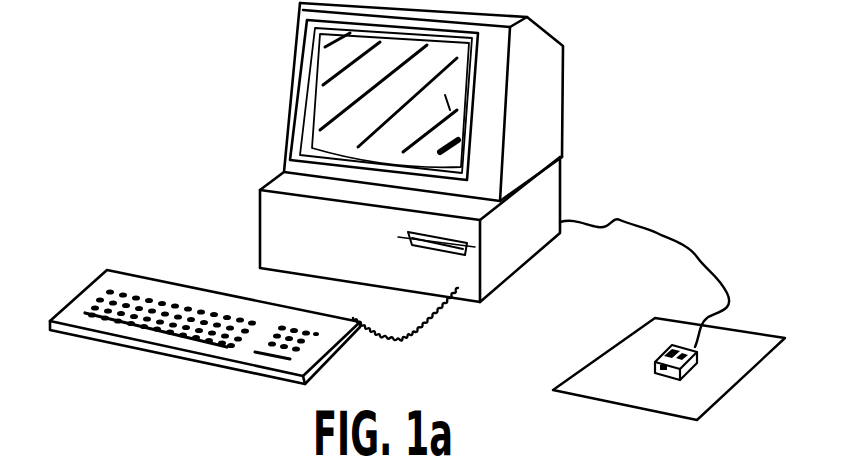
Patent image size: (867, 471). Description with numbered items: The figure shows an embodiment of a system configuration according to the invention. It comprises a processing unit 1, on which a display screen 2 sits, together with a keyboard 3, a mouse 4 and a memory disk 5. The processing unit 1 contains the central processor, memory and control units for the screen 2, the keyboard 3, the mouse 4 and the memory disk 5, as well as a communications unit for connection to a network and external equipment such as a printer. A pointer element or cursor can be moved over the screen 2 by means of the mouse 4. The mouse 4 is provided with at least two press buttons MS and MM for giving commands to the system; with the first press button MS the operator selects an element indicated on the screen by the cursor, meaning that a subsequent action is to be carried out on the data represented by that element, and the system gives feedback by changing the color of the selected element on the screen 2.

The processing unit 1 is at (563, 185).
The display screen 2 is at (447, 108).
The keyboard 3 is at (157, 338).
The mouse 4 is at (653, 377).
The memory disk 5 is at (443, 253).
The first press button MS is at (660, 347).
The second press button MM is at (697, 365).